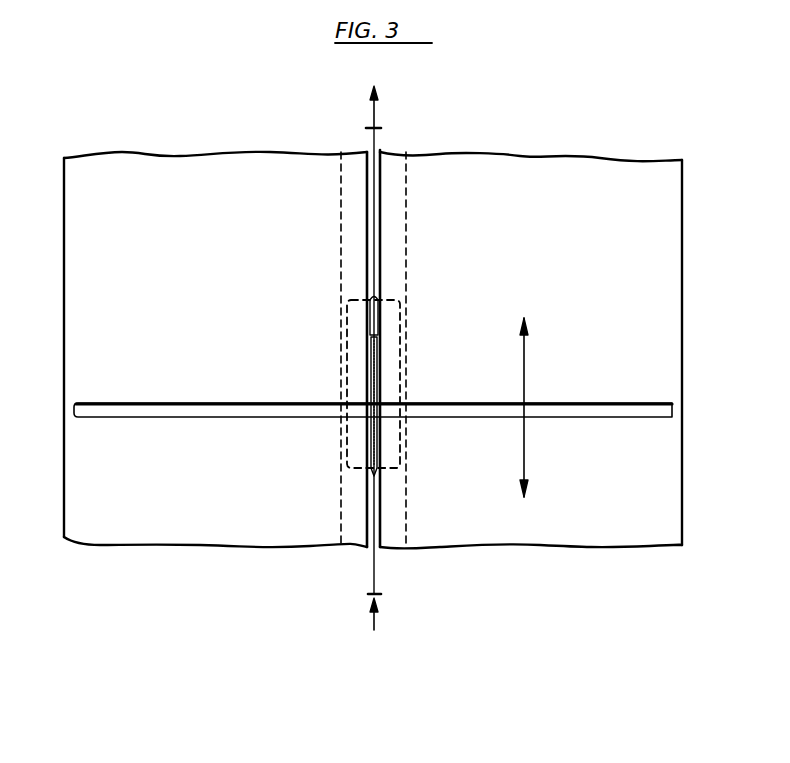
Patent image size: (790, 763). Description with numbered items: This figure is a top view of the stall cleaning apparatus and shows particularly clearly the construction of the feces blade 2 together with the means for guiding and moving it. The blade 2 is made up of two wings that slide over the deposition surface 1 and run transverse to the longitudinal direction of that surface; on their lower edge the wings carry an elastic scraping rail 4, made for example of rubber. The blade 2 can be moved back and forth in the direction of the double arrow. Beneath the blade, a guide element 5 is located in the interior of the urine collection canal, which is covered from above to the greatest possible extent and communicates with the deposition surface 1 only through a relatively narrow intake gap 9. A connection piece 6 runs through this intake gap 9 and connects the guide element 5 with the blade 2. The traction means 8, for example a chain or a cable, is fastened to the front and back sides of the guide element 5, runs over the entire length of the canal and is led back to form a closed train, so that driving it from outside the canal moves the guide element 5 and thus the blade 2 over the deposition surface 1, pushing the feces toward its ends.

The deposition surface 1 is at (130, 180).
The feces blade 2 is at (160, 412).
The elastic scraping rail 4 is at (143, 402).
The guide element 5 is at (376, 326).
The connection piece 6 is at (377, 376).
The traction means 8 is at (378, 143).
The intake gap 9 is at (381, 216).